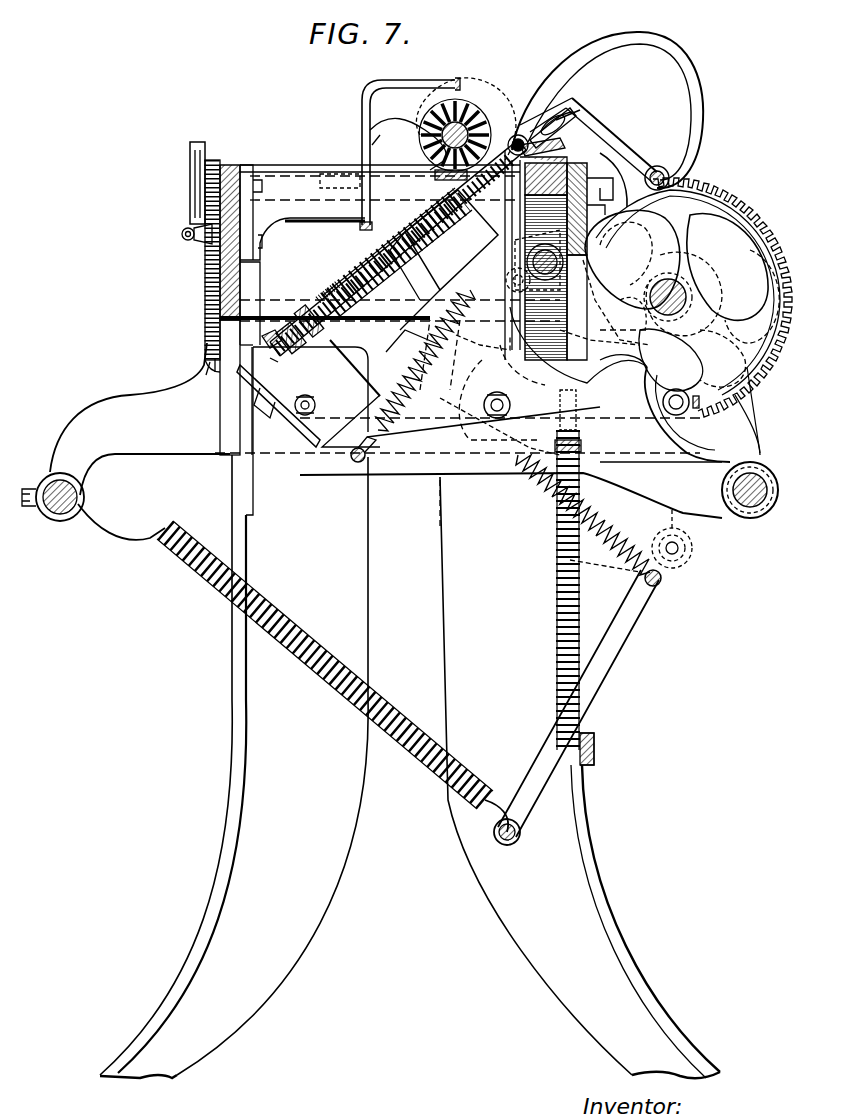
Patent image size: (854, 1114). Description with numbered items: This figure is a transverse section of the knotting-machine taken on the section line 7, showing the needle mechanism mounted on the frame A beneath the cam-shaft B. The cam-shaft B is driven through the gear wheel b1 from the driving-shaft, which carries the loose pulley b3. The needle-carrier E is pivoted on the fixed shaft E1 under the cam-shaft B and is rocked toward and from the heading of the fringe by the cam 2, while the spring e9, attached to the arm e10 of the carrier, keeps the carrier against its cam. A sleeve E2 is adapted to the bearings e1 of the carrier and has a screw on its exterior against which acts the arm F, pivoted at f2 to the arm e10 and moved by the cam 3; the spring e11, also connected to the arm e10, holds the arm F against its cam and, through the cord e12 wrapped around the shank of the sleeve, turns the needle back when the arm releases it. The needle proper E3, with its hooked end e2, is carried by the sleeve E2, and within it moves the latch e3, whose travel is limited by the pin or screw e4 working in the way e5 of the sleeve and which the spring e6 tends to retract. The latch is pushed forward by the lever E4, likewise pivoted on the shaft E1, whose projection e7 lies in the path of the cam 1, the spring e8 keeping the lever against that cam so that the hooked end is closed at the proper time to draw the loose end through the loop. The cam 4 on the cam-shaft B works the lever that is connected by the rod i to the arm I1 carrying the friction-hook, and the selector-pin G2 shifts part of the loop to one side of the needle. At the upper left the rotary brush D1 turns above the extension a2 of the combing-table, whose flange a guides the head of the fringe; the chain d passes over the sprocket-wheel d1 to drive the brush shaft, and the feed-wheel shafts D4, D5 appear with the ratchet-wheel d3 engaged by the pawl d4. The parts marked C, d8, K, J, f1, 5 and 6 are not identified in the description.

The frame arm C is at (126, 441).
The pawl d4 is at (195, 236).
The chain d is at (199, 260).
The ratchet-wheel d3 is at (206, 275).
The bracket d8 is at (208, 330).
The feed-wheel shaft D4 is at (380, 255).
The frame A is at (325, 303).
The selector-pin G2 is at (399, 154).
The rotary brush D1 is at (465, 124).
The loose pulley b3 is at (408, 144).
The table extension a2 is at (439, 170).
The sleeve E2 is at (398, 248).
The spring e6 is at (372, 268).
The pin or screw e4 is at (292, 330).
The way e5 is at (312, 312).
The bearings e1 is at (332, 306).
The feed-wheel shaft D5 is at (268, 338).
The latch e3 is at (418, 216).
The arm F is at (442, 271).
The spring e8 is at (425, 360).
The needle-carrier E is at (490, 373).
The rod i is at (512, 296).
The lever E4 is at (475, 434).
The cord e12 is at (488, 405).
The flange a is at (596, 196).
The sprocket-wheel d1 is at (565, 147).
The section line 7 is at (550, 260).
The loop handle K is at (609, 110).
The loop arm J is at (594, 149).
The needle E3 is at (564, 124).
The hooked end e2 is at (568, 112).
The gear wheel b1 is at (694, 297).
The cam-shaft B is at (688, 298).
The cam 1 is at (727, 266).
The cam 2 is at (631, 277).
The cam 3 is at (752, 296).
The cam 4 is at (723, 358).
The cam 5 is at (684, 294).
The cam 6 is at (661, 323).
The arm I1 is at (690, 402).
The projection e7 is at (645, 396).
The link f1 is at (730, 432).
The fixed shaft E1 is at (750, 498).
The pivot f2 is at (680, 552).
The spring e11 is at (586, 570).
The carrier arm e10 is at (576, 702).
The spring e9 is at (332, 676).